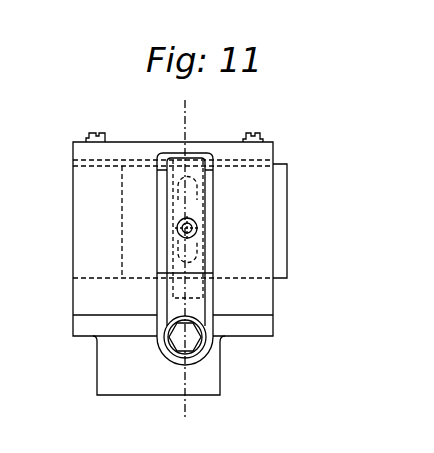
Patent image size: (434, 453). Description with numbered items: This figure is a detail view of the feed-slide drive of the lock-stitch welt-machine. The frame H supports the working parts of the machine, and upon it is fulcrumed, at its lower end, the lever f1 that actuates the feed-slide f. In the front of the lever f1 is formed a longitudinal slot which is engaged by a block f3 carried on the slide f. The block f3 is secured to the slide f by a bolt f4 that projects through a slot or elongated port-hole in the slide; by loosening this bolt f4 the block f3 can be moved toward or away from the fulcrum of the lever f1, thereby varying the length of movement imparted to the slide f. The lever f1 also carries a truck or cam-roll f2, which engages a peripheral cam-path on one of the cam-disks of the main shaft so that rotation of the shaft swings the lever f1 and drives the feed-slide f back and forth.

The frame H is at (161, 264).
The feed-slide f is at (284, 204).
The lever f1 is at (205, 303).
The truck or cam-roll f2 is at (197, 229).
The block f3 is at (178, 206).
The bolt f4 is at (203, 207).